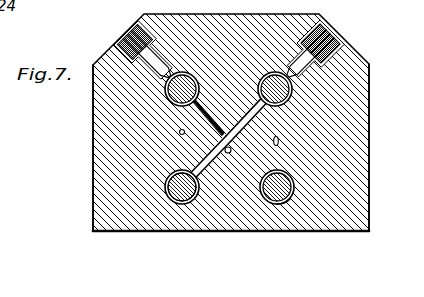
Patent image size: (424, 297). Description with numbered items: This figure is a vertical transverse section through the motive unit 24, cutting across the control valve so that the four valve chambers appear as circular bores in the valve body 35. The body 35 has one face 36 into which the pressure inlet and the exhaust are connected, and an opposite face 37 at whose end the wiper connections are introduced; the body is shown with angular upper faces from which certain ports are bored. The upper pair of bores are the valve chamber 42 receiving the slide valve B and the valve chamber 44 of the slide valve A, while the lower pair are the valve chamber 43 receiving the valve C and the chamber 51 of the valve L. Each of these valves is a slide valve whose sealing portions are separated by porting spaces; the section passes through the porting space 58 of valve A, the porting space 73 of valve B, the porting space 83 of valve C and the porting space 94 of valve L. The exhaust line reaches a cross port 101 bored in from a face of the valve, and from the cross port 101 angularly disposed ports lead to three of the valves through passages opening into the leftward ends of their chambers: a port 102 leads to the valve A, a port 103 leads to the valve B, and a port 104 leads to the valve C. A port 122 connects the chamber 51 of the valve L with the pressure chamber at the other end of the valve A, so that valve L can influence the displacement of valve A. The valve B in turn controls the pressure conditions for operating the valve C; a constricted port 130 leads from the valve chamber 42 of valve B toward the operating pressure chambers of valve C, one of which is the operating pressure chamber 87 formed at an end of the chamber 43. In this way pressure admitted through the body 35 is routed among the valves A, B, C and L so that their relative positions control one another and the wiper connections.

The valve body block 24 is at (192, 252).
The valve body 35 is at (353, 228).
The face 36 is at (94, 217).
The opposite face 37 is at (368, 221).
The valve chamber 42 is at (180, 90).
The valve chamber 43 is at (165, 196).
The valve chamber 44 is at (291, 95).
The chamber 51 is at (295, 192).
The porting space 58 is at (292, 84).
The porting space 73 is at (169, 101).
The porting space 83 is at (181, 189).
The operating pressure chamber 87 is at (10, 242).
The porting space 94 is at (288, 208).
The cross port 101 is at (229, 153).
The port 102 is at (253, 113).
The port 103 is at (199, 112).
The port 104 is at (205, 161).
The port 122 is at (279, 143).
The constricted port 130 is at (179, 132).
The valve A is at (277, 89).
The valve B is at (166, 94).
The valve C is at (166, 184).
The valve L is at (279, 184).